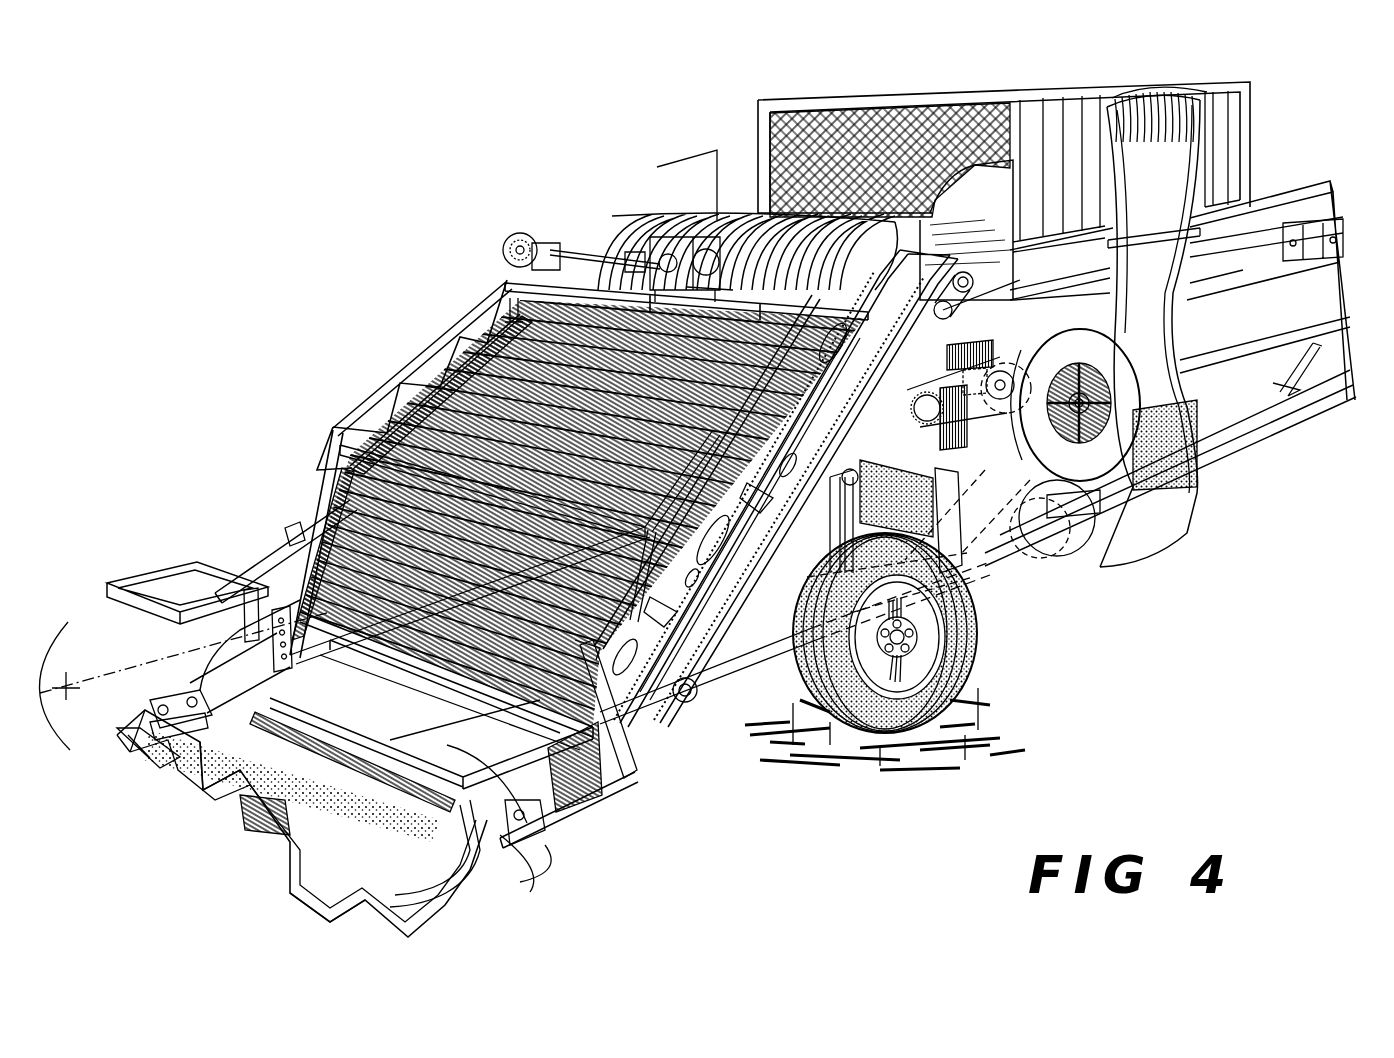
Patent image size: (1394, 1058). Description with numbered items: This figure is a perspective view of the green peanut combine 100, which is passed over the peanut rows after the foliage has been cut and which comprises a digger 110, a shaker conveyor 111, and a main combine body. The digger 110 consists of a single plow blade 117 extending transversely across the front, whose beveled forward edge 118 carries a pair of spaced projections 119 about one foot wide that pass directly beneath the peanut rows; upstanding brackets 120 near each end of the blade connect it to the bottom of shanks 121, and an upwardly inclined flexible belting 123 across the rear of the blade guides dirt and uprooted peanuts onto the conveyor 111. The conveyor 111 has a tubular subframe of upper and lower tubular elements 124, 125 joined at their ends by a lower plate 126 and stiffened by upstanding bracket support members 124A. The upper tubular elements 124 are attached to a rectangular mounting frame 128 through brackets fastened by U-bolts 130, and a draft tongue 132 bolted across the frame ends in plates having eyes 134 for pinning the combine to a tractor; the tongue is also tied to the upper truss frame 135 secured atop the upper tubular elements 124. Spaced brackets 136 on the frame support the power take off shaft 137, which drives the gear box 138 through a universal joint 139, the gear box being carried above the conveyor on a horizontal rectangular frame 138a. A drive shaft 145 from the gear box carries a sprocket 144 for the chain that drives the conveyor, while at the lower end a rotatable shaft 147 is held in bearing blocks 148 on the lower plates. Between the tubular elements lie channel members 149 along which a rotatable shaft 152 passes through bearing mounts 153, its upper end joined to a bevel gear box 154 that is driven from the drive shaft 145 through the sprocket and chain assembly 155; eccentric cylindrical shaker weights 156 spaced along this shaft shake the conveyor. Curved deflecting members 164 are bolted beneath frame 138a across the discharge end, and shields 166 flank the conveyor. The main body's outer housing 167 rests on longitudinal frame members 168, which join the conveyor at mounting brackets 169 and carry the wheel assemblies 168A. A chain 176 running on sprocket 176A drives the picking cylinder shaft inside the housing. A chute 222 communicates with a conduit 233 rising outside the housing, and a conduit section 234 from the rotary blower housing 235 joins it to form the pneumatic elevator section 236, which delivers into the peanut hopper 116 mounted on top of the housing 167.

The green peanut combine 100 is at (342, 362).
The digger 110 is at (350, 928).
The conveyor 111 is at (428, 346).
The peanut hopper 116 is at (760, 138).
The plow blade 117 is at (276, 826).
The forward edge 118 is at (215, 838).
The projections 119 is at (172, 792).
The upstanding brackets 120 is at (132, 748).
The shanks 121 is at (468, 868).
The flexible belting 123 is at (312, 782).
The upper tubular elements 124 is at (255, 562).
The upstanding bracket support members 124A is at (632, 762).
The lower tubular elements 125 is at (588, 795).
The lower plate 126 is at (548, 838).
The rectangular mounting frame 128 is at (155, 582).
The U-bolts 130 is at (600, 787).
The draft tongue 132 is at (440, 496).
The eyes 134 is at (165, 705).
The upper truss frame 135 is at (350, 418).
The spaced brackets 136 is at (470, 595).
The power take off shaft 137 is at (513, 317).
The gear box 138 is at (618, 228).
The rectangular shaped frame 138a is at (507, 278).
The universal joint 139 is at (612, 240).
The sprocket 144 is at (503, 248).
The drive shaft 145 is at (567, 238).
The rotatable shaft 147 is at (545, 858).
The bearing blocks 148 is at (507, 818).
The channel members 149 is at (725, 600).
The rotatable shaft 152 is at (716, 675).
The bearing mounts 153 is at (712, 622).
The bevel gear box 154 is at (935, 275).
The sprocket and chain assembly 155 is at (965, 282).
The shaker weights 156 is at (748, 580).
The curved deflecting members 164 is at (700, 240).
The shields 166 is at (657, 167).
The outer housing 167 is at (1340, 200).
The longitudinal frame members 168 is at (978, 585).
The wheel assemblies 168A is at (962, 667).
The mounting brackets 169 is at (680, 694).
The chain 176 is at (1079, 389).
The sprocket 176A is at (1008, 345).
The chute 222 is at (1081, 560).
The conduit 233 is at (1195, 515).
The conduit section 234 is at (1175, 345).
The rotary blower housing 235 is at (1089, 471).
The pneumatic elevator section 236 is at (1175, 288).